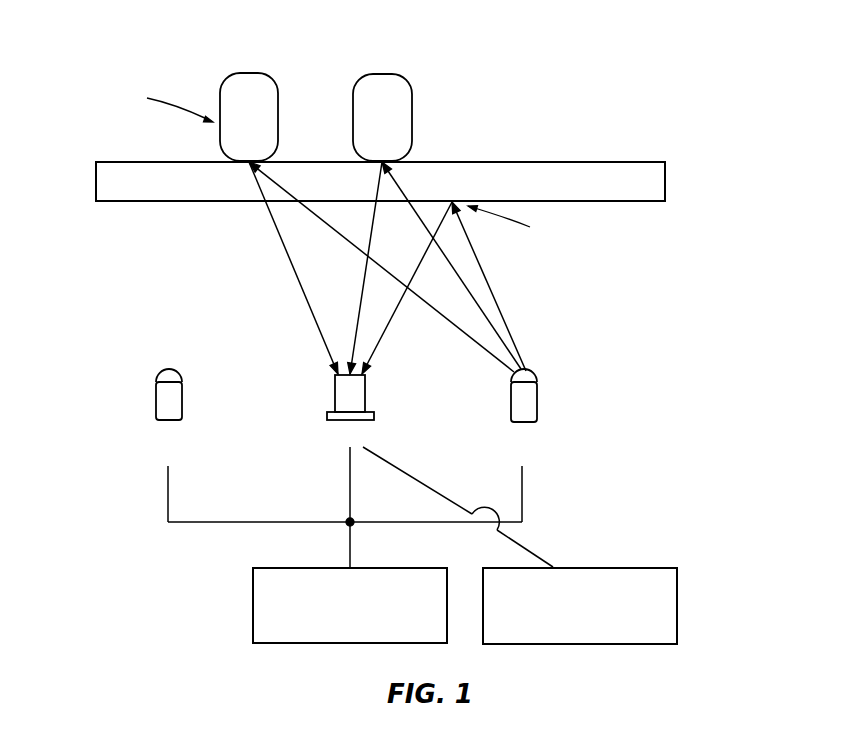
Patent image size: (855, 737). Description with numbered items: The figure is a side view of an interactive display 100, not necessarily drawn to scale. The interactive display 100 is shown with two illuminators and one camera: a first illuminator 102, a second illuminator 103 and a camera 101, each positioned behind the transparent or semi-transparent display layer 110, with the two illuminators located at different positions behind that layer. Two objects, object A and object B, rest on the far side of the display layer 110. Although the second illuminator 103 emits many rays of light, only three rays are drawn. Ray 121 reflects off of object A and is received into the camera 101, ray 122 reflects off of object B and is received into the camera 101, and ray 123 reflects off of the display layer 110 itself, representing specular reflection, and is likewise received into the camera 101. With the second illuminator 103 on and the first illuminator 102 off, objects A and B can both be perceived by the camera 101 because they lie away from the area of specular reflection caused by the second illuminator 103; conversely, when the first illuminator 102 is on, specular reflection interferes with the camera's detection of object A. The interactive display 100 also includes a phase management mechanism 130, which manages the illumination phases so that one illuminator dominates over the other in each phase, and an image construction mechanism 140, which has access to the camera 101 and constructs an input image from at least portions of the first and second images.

The interactive display 100 is at (507, 100).
The camera 101 is at (334, 398).
The first illuminator 102 is at (156, 396).
The second illuminator 103 is at (540, 398).
The display layer 110 is at (665, 181).
The ray of light 121 is at (442, 320).
The ray of light 122 is at (467, 290).
The ray of light 123 is at (481, 267).
The phase management mechanism 130 is at (335, 625).
The image construction mechanism 140 is at (565, 625).